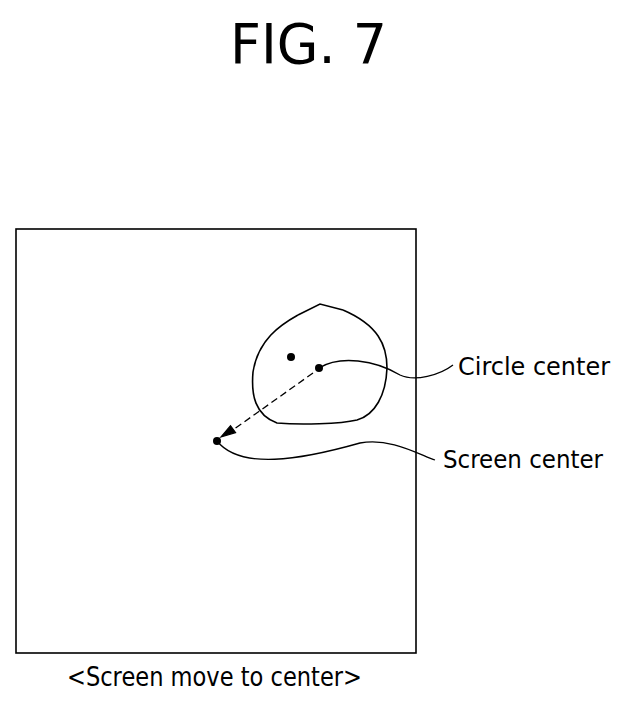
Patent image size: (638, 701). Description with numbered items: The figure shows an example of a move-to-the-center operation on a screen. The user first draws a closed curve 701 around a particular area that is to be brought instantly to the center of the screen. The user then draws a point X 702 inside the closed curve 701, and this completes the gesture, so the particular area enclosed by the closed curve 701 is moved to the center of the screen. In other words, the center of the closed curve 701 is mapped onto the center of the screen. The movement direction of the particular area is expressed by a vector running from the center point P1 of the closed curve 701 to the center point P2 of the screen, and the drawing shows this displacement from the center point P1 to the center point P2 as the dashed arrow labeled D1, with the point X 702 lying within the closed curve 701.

The closed curve 701 is at (343, 310).
The point X 702 is at (300, 314).
The point X is at (291, 340).
The center point of the closed curve P1 is at (319, 388).
The center point of the screen P2 is at (213, 459).
The movement distance from circle center to screen center D1 is at (262, 405).